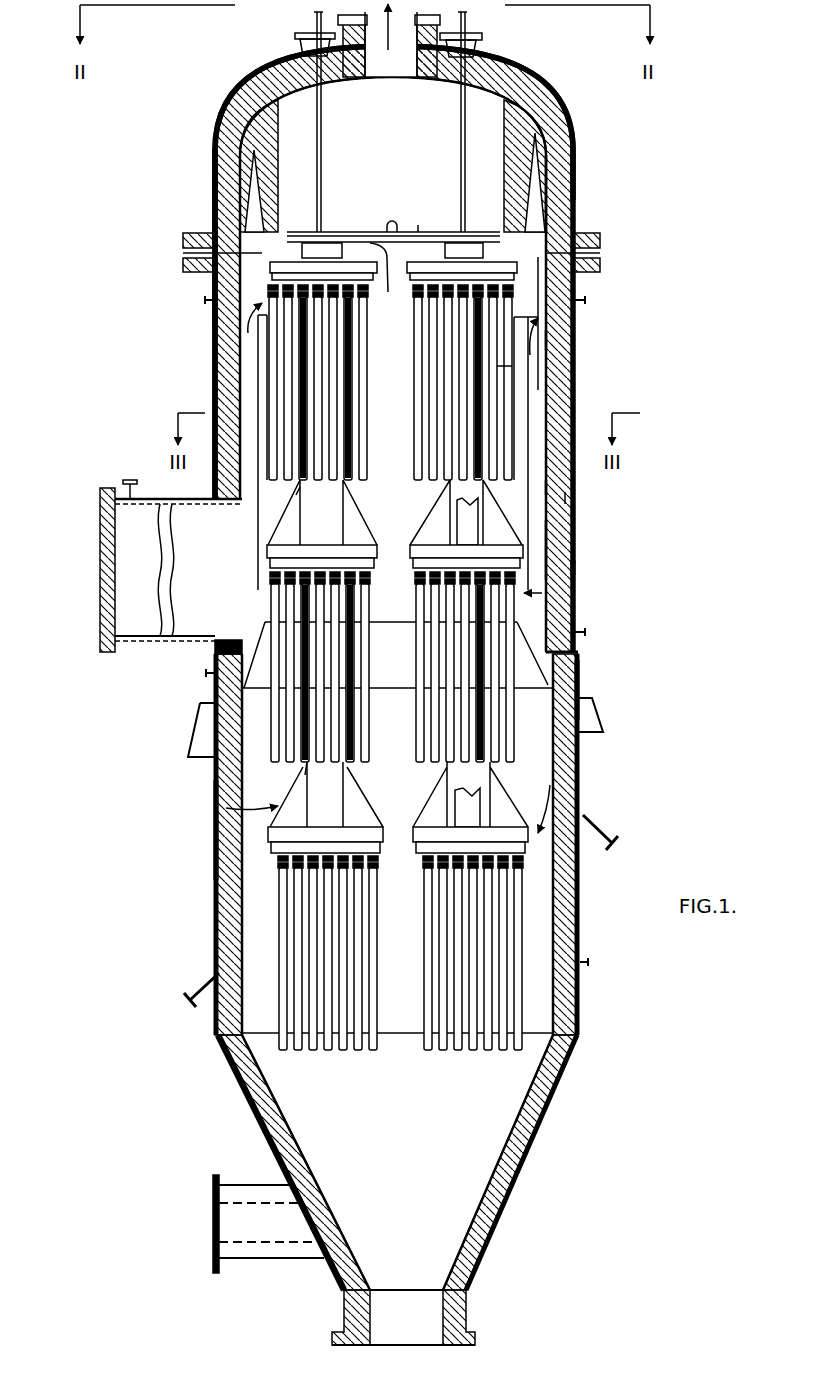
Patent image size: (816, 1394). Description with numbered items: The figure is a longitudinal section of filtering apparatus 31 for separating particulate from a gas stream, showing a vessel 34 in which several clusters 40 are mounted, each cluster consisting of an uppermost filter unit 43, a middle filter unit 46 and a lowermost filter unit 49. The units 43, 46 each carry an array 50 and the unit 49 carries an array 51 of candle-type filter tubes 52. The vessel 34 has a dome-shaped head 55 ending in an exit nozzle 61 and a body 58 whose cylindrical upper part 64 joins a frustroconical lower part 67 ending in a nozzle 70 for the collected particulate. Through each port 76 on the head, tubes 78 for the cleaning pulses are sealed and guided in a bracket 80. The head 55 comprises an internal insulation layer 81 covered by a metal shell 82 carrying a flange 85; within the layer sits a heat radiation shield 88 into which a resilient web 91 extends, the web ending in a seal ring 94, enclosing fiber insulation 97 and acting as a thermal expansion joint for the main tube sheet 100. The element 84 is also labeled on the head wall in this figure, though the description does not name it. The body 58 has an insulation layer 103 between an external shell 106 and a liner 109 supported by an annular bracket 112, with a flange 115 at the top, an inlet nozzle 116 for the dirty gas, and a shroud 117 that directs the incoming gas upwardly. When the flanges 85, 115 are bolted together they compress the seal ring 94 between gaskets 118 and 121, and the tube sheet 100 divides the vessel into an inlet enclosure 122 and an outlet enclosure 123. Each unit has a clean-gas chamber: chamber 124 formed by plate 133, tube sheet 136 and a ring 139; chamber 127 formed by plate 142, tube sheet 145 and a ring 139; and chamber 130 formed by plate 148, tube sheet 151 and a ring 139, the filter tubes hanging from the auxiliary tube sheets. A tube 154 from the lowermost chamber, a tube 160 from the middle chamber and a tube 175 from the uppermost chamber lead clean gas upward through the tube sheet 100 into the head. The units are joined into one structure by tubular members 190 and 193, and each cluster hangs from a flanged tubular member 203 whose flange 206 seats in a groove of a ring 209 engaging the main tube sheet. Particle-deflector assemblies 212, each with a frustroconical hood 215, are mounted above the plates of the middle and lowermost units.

The filtering apparatus 31 is at (649, 347).
The vessel 34 is at (580, 548).
The cluster 40 is at (295, 715).
The filter unit 43 is at (379, 375).
The filter unit 46 is at (578, 598).
The filter unit 49 is at (280, 866).
The array 50 is at (372, 715).
The array 51 is at (487, 985).
The filter tubes 52 is at (497, 366).
The head 55 is at (572, 115).
The body 58 is at (611, 790).
The nozzle 61 is at (445, 22).
The upper part 64 is at (578, 510).
The lower part 67 is at (540, 1142).
The nozzle 70 is at (474, 1312).
The port 76 is at (303, 50).
The tubes 78 is at (296, 36).
The bracket 80 is at (418, 226).
The layer 81 is at (518, 78).
The shell 82 is at (220, 113).
The vessel shell wall 84 is at (215, 148).
The flange 85 is at (600, 242).
The heat radiation shield 88 is at (540, 92).
The resilient web 91 is at (576, 152).
The seal ring 94 is at (600, 265).
The fiber thermal insulation 97 is at (216, 205).
The main tube sheet 100 is at (428, 232).
The layer 103 is at (216, 370).
The shell 106 is at (579, 682).
The liner 109 is at (218, 832).
The annular bracket 112 is at (214, 290).
The flange 115 is at (183, 240).
The inlet nozzle 116 is at (147, 652).
The shroud 117 is at (578, 620).
The annular gasket 118 is at (580, 235).
The annular gasket 121 is at (200, 268).
The inlet enclosure 122 is at (537, 392).
The outlet enclosure 123 is at (258, 84).
The filter clean-gas chamber 124 is at (570, 188).
The filter clean-gas chamber 127 is at (360, 505).
The filter clean-gas chamber 130 is at (548, 800).
The plate 133 is at (284, 230).
The tube sheet 136 is at (242, 300).
The ring 139 is at (512, 345).
The plate 142 is at (578, 568).
The tube sheet 145 is at (372, 570).
The plate 148 is at (365, 830).
The tube sheet 151 is at (515, 855).
The tube 154 is at (450, 232).
The tube 160 is at (548, 487).
The tube 175 is at (506, 165).
The tubular member 190 is at (305, 775).
The tubular member 193 is at (300, 487).
The flanged tubular member 203 is at (390, 279).
The flange 206 is at (330, 232).
The ring 209 is at (388, 226).
The particle-deflector assembly 212 is at (235, 806).
The particle-deflector hood 215 is at (567, 498).